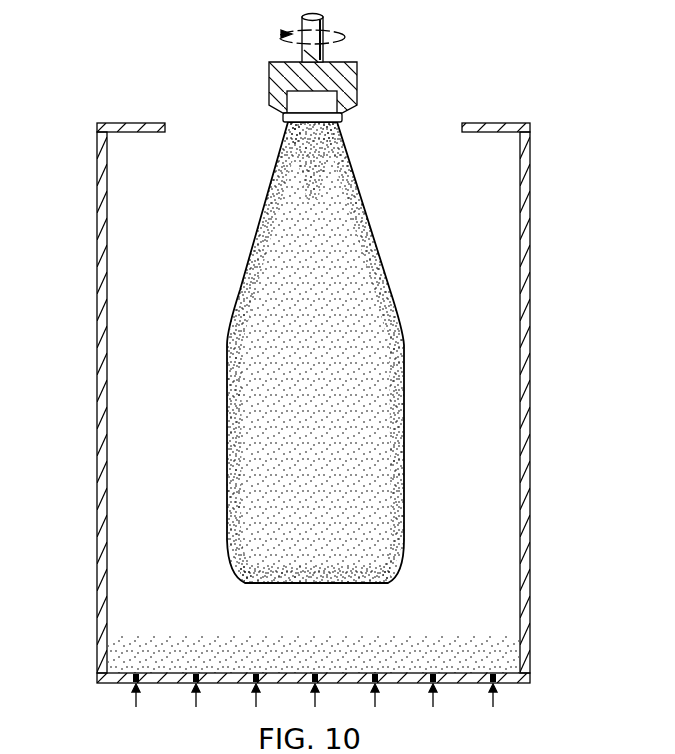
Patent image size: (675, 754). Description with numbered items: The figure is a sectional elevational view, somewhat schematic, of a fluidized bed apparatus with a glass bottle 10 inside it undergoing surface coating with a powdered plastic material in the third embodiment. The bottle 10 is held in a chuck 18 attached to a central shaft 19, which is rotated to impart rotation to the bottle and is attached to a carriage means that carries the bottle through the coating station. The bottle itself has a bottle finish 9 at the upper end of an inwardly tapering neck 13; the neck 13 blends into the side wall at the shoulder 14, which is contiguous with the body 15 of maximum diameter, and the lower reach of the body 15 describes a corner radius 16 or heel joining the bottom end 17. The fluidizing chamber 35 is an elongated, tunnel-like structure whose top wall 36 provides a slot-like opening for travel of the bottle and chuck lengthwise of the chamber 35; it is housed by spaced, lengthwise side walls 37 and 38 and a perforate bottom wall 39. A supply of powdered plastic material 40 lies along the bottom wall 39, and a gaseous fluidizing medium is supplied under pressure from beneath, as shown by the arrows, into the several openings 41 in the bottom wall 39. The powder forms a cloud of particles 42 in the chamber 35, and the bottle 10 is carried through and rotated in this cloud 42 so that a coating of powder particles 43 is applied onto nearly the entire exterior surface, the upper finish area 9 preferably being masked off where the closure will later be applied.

The bottle finish 9 is at (308, 94).
The glass bottle 10 is at (258, 189).
The neck 13 is at (250, 256).
The shoulder 14 is at (227, 347).
The body 15 is at (404, 508).
The corner radius 16 is at (388, 585).
The bottom end 17 is at (325, 585).
The chuck 18 is at (368, 80).
The central shaft 19 is at (325, 22).
The fluidizing chamber 35 is at (463, 286).
The top wall 36 is at (136, 123).
The side wall 37 is at (97, 372).
The side wall 38 is at (531, 401).
The perforate bottom wall 39 is at (463, 683).
The powdered plastic material 40 is at (431, 659).
The openings 41 is at (195, 673).
The cloud of particles 42 is at (452, 238).
The coating of powder particles 43 is at (387, 401).